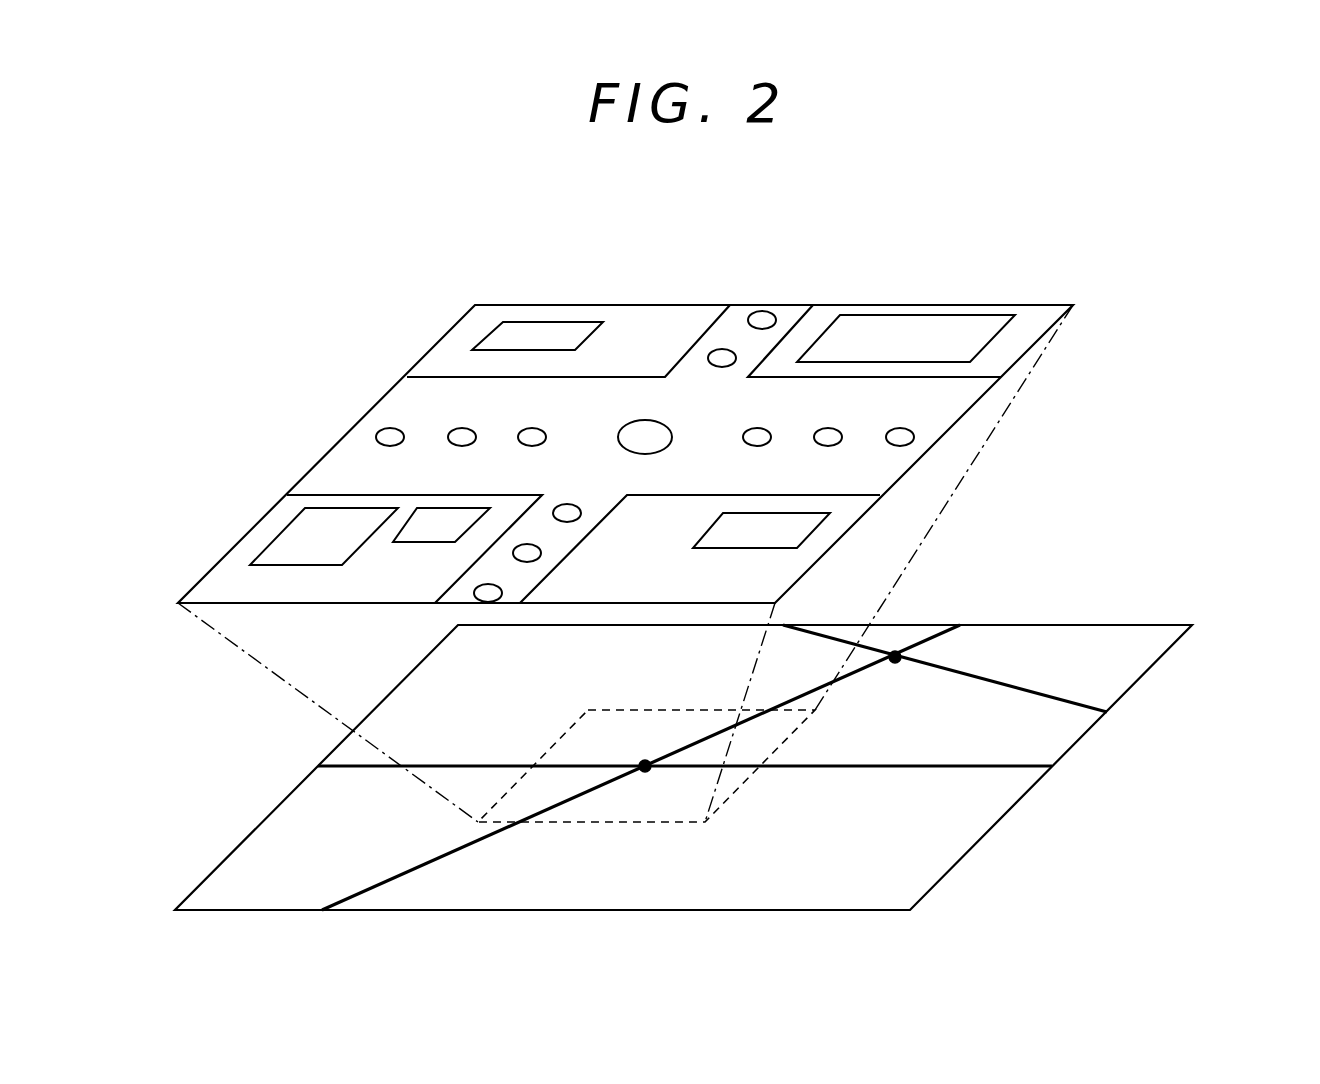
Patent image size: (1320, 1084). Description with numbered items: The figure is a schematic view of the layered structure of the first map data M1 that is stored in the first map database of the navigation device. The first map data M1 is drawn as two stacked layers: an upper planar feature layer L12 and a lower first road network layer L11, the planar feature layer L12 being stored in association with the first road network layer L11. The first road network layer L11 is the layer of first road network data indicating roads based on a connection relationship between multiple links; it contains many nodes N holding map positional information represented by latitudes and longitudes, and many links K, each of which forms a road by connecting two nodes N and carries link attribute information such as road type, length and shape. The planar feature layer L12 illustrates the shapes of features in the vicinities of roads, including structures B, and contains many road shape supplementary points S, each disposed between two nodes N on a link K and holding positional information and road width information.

The first map data M1 is at (1118, 238).
The planar feature layer L12 is at (228, 548).
The first road network layer L11 is at (268, 815).
The structures B is at (505, 335).
The road shape supplementary points S is at (748, 316).
The nodes N is at (660, 430).
The links K is at (373, 768).